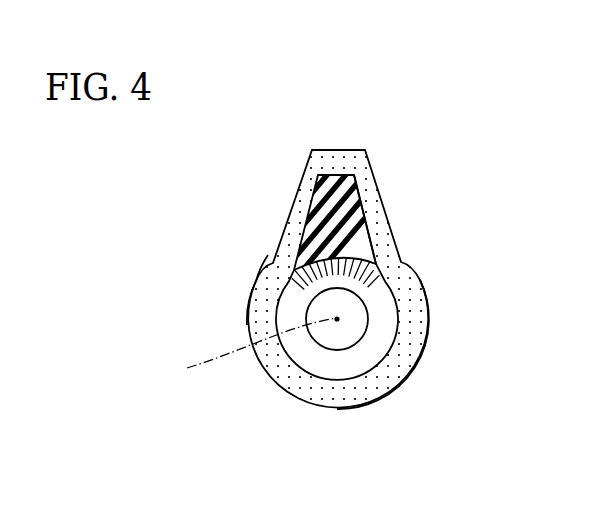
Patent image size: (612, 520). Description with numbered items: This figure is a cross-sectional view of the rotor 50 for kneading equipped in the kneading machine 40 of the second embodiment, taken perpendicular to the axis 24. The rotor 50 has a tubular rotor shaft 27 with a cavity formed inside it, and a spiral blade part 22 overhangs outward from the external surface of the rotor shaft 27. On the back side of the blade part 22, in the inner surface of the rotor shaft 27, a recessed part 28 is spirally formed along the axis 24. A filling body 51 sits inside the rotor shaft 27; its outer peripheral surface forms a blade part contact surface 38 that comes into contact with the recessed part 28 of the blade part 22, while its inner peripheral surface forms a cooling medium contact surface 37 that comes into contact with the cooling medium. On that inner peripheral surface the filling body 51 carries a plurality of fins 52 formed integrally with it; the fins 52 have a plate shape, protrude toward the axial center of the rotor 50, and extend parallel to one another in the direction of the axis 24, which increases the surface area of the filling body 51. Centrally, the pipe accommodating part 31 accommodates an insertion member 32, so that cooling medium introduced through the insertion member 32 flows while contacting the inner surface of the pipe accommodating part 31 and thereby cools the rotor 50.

The kneading machine 40 is at (444, 94).
The rotor for kneading 50 is at (420, 274).
The blade part 22 is at (322, 150).
The filling body 51 is at (341, 175).
The recessed part 28 is at (362, 213).
The blade part contact surface 38 is at (376, 254).
The fins 52 is at (372, 285).
The cooling medium contact surface 37 is at (300, 268).
The rotor shaft 27 is at (248, 314).
The axis 24 is at (261, 346).
The insertion member 32 is at (314, 332).
The pipe accommodating part 31 is at (385, 354).